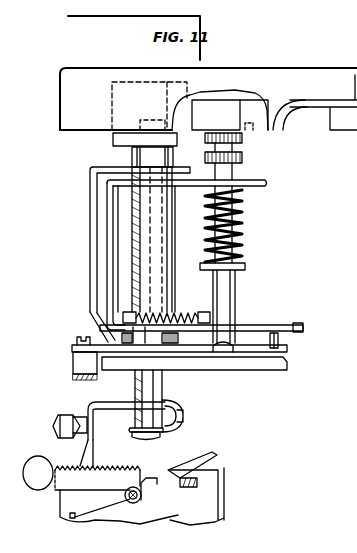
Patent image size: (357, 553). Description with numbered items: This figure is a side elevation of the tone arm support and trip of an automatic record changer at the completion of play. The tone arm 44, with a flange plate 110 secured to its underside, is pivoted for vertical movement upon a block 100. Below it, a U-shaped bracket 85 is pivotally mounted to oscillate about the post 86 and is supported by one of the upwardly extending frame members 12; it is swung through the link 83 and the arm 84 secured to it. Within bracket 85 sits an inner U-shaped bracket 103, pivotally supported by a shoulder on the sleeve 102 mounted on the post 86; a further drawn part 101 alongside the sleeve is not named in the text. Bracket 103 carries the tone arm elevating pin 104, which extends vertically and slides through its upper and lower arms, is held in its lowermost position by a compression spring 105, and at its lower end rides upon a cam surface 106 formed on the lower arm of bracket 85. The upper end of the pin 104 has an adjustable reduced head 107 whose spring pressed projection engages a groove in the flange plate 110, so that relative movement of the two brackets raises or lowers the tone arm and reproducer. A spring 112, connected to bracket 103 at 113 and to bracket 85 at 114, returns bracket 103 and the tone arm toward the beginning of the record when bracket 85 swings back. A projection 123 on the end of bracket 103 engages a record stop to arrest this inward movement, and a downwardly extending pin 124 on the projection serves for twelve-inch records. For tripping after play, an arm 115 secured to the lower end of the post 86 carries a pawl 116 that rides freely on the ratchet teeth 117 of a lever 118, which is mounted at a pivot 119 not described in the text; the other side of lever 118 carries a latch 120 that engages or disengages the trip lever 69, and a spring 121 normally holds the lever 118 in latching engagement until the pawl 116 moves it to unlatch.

The frame member 12 is at (278, 371).
The tone arm 44 is at (304, 75).
The trip lever 69 is at (196, 481).
The link 83 is at (74, 365).
The arm 84 is at (98, 345).
The U-shaped bracket 85 is at (90, 282).
The post 86 is at (153, 392).
The block 100 is at (117, 137).
The shaft 101 is at (133, 255).
The sleeve 102 is at (131, 223).
The U-shaped bracket 103 is at (190, 186).
The tone arm elevating pin 104 is at (226, 289).
The compression spring 105 is at (244, 206).
The cam surface 106 is at (226, 343).
The adjustable reduced head 107 is at (236, 133).
The flange plate 110 is at (230, 115).
The spring 112 is at (183, 313).
The spring connection point 113 is at (212, 316).
The spring connection point 114 is at (127, 315).
The arm 115 is at (110, 403).
The pawl 116 is at (88, 448).
The ratchet teeth 117 is at (76, 463).
The lever 118 is at (83, 478).
The pivot pin 119 is at (142, 500).
The latch 120 is at (183, 483).
The spring 121 is at (107, 512).
The projection 123 is at (300, 330).
The pin 124 is at (280, 344).